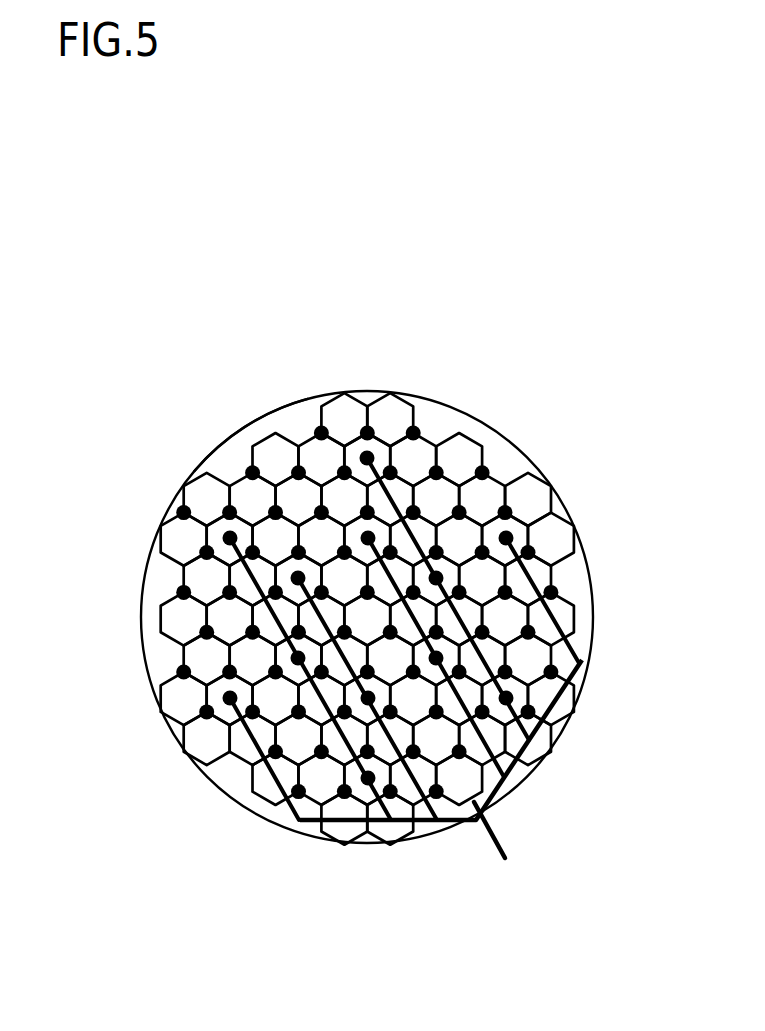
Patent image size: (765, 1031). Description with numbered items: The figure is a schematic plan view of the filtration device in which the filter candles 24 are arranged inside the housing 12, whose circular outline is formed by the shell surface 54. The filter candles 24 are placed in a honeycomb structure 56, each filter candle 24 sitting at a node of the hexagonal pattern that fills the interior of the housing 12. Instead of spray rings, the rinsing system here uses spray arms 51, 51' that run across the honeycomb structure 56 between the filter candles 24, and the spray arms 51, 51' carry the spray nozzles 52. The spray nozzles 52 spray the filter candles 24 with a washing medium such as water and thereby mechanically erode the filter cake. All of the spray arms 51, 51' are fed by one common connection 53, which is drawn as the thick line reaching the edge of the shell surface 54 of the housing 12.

The housing 12 is at (546, 474).
The filter candles 24 is at (445, 473).
The spray arm 51 is at (318, 711).
The spray arm 51' is at (515, 617).
The spray nozzles 52 is at (227, 702).
The connection 53 is at (493, 847).
The shell surface 54 is at (262, 415).
The honeycomb structure 56 is at (205, 503).